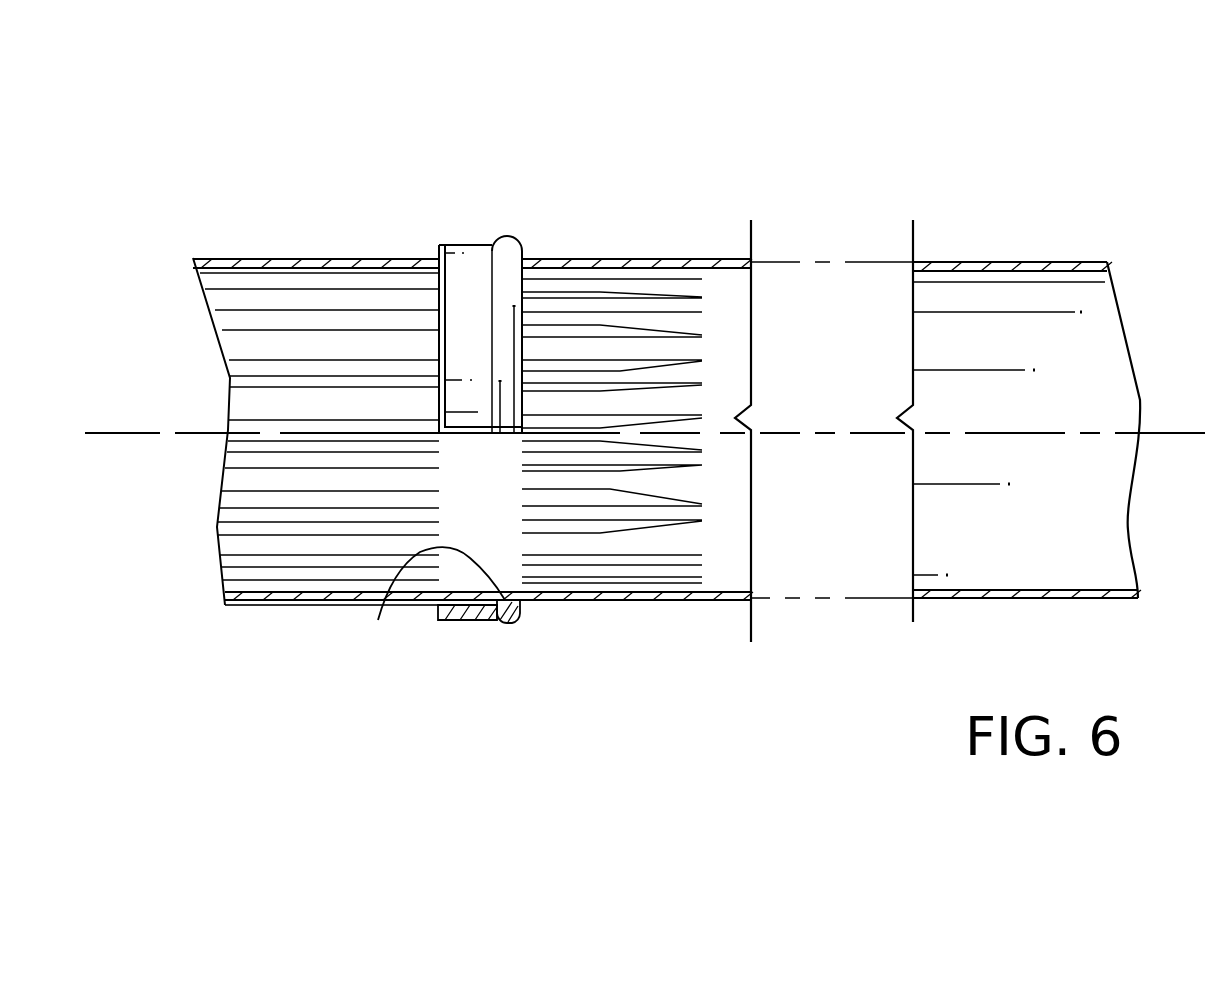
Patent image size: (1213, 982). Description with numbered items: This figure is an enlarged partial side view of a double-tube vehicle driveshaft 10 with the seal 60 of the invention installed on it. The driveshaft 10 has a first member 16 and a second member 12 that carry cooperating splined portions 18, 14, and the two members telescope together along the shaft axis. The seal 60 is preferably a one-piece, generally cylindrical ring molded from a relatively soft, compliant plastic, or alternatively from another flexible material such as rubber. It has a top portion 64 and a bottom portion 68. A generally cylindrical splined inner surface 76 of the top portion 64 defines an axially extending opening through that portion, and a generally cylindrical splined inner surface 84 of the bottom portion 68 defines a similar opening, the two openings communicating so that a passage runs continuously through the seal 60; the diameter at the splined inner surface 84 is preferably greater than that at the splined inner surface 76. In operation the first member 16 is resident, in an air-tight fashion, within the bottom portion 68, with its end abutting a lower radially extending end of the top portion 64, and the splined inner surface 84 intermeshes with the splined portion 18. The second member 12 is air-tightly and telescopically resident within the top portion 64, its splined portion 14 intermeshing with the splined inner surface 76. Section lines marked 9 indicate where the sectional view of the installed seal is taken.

The section line 9- 9 is at (505, 212).
The double-tube vehicle driveshaft 10 is at (1063, 208).
The second member 12 is at (990, 262).
The splined portion 14 is at (650, 600).
The first member 16 is at (253, 258).
The splined portion 18 is at (345, 607).
The seal 60 is at (518, 236).
The top portion 64 is at (520, 622).
The bottom portion 68 is at (460, 622).
The splined inner surface 76 is at (378, 620).
The splined inner surface 84 is at (492, 622).